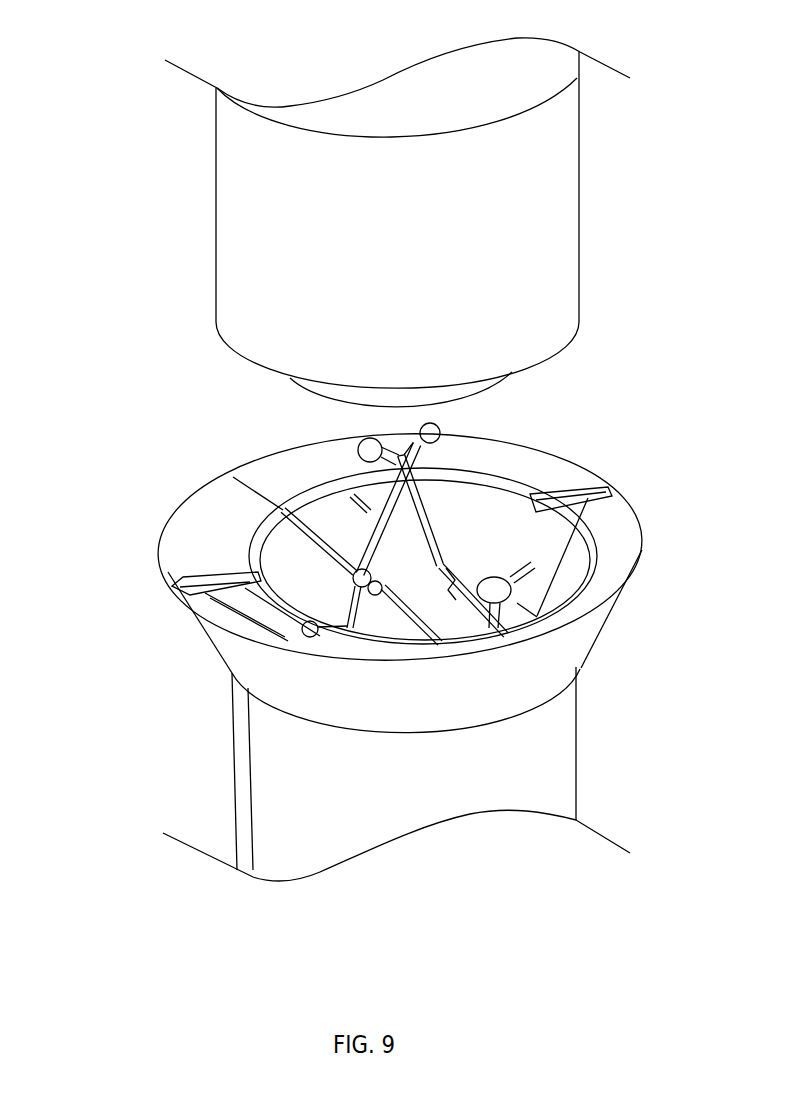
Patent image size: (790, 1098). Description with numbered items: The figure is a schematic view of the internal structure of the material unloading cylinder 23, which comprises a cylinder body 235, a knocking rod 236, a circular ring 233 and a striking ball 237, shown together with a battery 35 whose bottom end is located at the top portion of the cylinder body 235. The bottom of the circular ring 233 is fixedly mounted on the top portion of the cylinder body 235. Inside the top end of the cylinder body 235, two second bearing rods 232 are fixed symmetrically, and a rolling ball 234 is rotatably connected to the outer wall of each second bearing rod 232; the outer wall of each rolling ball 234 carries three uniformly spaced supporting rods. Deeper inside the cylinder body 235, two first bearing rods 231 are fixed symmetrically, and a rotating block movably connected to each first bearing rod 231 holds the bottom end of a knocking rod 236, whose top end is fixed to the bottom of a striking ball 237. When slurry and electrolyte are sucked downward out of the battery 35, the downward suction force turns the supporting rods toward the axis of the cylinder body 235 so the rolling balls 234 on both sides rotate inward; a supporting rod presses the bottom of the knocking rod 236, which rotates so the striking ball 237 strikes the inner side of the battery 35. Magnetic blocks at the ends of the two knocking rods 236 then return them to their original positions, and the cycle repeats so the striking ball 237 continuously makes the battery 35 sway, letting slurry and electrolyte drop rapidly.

The material unloading cylinder 23 is at (283, 848).
The battery 35 is at (563, 312).
The first bearing rod 231 is at (357, 573).
The second bearing rod 232 is at (233, 588).
The circular ring 233 is at (190, 576).
The rolling ball 234 is at (298, 645).
The cylinder body 235 is at (272, 745).
The knocking rod 236 is at (387, 500).
The striking ball 237 is at (421, 426).